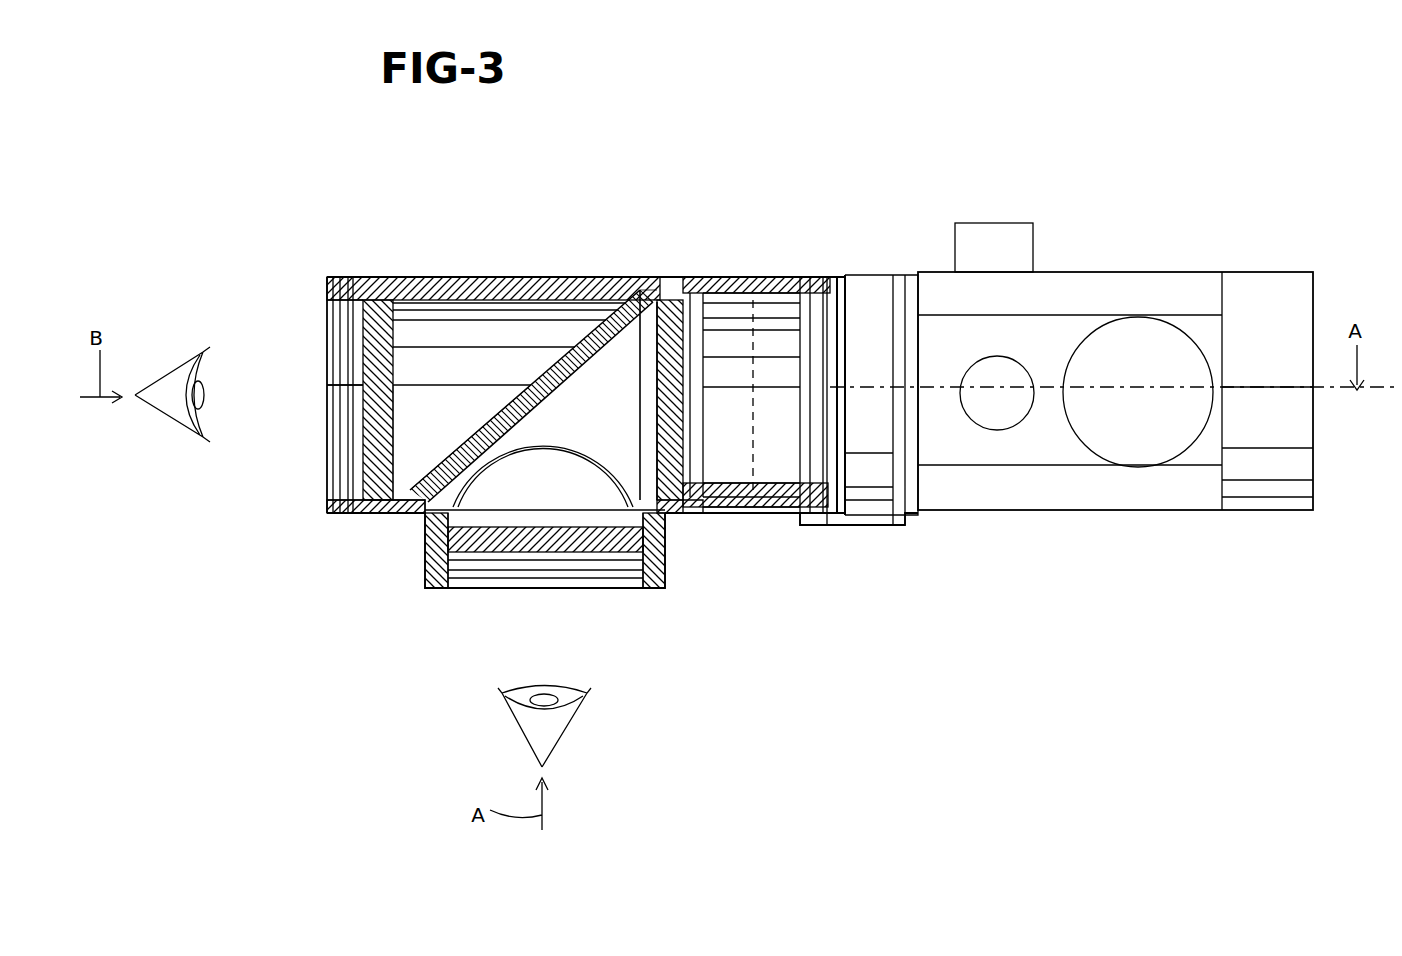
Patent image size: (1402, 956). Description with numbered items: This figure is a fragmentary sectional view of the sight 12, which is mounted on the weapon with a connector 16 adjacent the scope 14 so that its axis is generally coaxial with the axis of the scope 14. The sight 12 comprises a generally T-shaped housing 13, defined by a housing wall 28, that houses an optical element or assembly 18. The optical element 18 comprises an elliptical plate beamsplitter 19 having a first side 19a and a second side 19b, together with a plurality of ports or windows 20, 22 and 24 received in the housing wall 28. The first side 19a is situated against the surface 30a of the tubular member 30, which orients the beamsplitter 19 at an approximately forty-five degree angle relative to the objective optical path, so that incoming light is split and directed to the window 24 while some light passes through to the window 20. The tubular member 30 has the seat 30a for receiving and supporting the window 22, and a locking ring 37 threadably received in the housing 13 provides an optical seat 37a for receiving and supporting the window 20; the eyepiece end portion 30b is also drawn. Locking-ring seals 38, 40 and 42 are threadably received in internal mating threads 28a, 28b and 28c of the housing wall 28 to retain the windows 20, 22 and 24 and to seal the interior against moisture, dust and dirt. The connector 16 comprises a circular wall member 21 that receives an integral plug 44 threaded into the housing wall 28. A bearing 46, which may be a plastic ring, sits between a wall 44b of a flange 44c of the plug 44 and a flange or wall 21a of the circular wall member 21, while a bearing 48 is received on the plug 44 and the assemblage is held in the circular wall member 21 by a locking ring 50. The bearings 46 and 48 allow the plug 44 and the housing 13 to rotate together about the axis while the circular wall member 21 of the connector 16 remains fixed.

The sight 12 is at (428, 240).
The housing 13 is at (397, 276).
The scope 14 is at (1120, 272).
The connector 16 is at (888, 523).
The optical element or assembly 18 is at (587, 278).
The elliptical plate beamsplitter 19 is at (510, 375).
The first side 19a is at (470, 428).
The second side 19b is at (542, 418).
The window 20 is at (672, 298).
The circular wall member 21 is at (895, 276).
The flange or wall 21a is at (773, 285).
The window 22 is at (383, 513).
The window 24 is at (560, 560).
The housing wall 28 is at (533, 278).
The mating threads 28a is at (725, 278).
The mating threads 28b is at (333, 378).
The mating threads 28c is at (485, 585).
The tubular member 30 is at (478, 278).
The seat / surface 30a is at (634, 300).
The eyepiece rear portion 30b is at (333, 300).
The locking ring 37 is at (625, 494).
The optical seat 37a is at (632, 355).
The locking-ring seal 38 is at (698, 512).
The locking-ring seal 40 is at (348, 513).
The locking-ring seal 42 is at (628, 565).
The integral plug 44 is at (718, 515).
The wall 44b is at (772, 482).
The flange 44c is at (795, 525).
The bearing 46 is at (767, 515).
The bearing 48 is at (812, 285).
The locking ring 50 is at (838, 284).